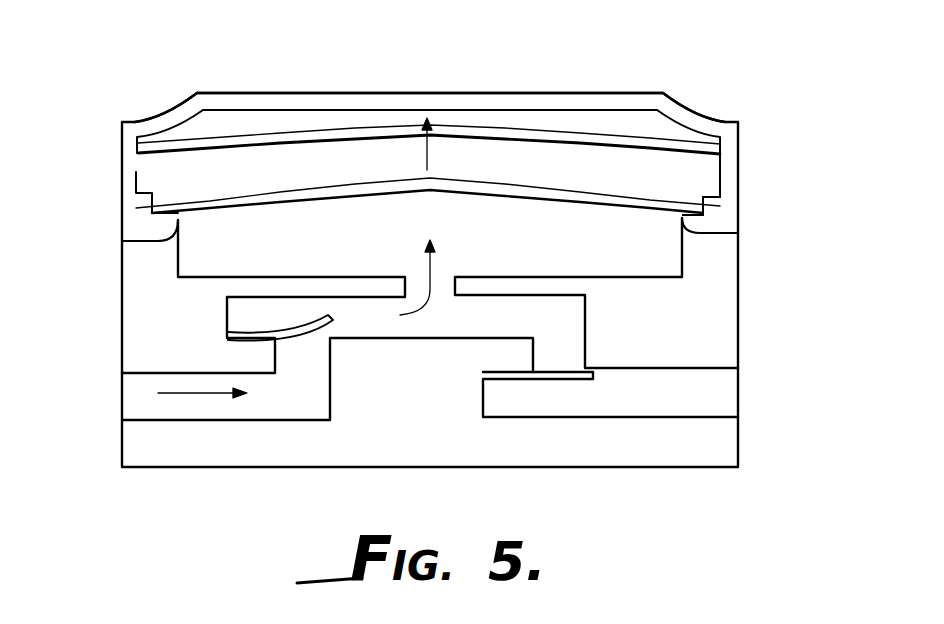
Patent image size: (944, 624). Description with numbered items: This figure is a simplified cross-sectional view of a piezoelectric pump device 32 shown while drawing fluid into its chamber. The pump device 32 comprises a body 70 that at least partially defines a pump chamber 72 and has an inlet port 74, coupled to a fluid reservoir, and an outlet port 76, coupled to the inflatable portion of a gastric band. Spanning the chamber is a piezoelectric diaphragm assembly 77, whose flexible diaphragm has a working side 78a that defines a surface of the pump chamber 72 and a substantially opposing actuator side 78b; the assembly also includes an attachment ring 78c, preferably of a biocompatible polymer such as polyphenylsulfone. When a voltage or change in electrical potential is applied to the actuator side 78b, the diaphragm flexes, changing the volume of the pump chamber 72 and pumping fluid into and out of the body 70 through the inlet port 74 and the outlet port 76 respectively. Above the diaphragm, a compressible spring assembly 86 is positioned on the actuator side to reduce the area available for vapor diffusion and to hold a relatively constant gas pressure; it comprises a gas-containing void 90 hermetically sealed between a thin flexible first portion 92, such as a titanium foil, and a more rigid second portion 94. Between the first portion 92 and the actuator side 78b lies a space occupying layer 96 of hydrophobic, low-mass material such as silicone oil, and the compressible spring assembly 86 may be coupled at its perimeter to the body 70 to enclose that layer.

The pump device 32 is at (693, 65).
The body 70 is at (740, 199).
The pump chamber 72 is at (385, 244).
The inlet port 74 is at (138, 402).
The outlet port 76 is at (717, 393).
The piezoelectric diaphragm assembly 77 is at (677, 195).
The working side 78a is at (242, 212).
The actuator side 78b is at (342, 178).
The attachment ring 78c is at (122, 242).
The compressible spring assembly 86 is at (168, 113).
The void 90 is at (472, 112).
The first portion 92 is at (247, 137).
The second portion 94 is at (382, 93).
The space occupying layer 96 is at (160, 176).